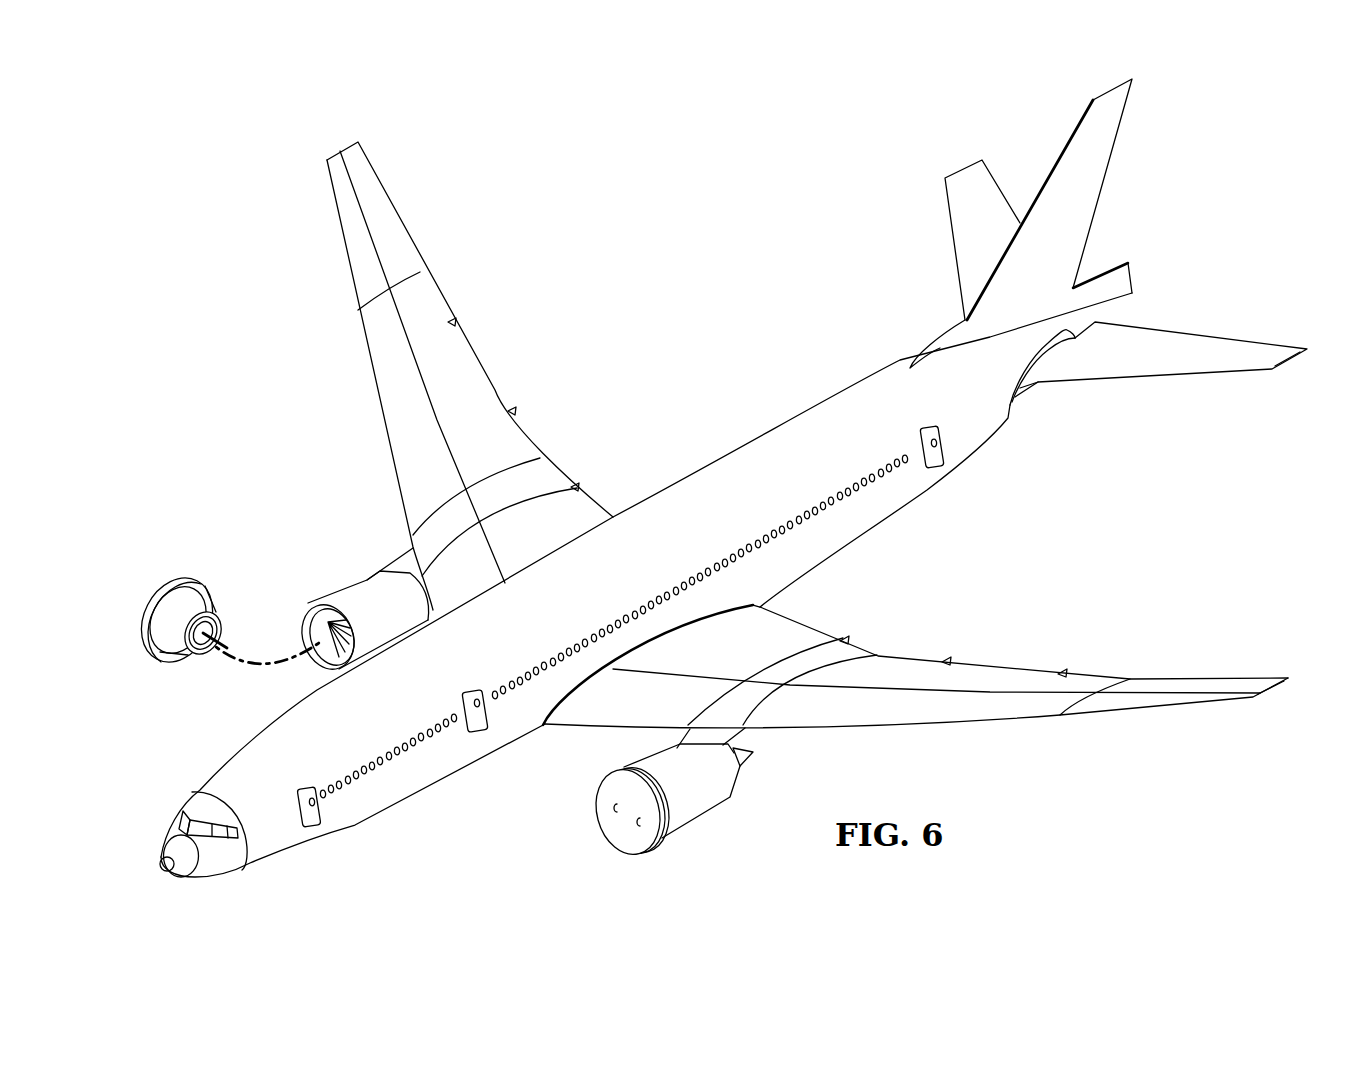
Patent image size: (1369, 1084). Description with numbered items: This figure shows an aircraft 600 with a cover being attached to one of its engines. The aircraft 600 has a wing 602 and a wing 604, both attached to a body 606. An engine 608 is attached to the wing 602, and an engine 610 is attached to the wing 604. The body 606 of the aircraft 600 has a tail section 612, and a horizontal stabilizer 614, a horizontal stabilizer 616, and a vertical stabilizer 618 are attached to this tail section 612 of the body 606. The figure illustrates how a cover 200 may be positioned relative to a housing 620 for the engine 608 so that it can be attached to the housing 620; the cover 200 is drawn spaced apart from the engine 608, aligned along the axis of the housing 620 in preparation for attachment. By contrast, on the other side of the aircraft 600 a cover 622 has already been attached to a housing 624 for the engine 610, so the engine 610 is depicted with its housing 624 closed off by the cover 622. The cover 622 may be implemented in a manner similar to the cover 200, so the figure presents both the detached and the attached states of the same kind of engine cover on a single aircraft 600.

The cover 200 is at (168, 581).
The aircraft 600 is at (676, 480).
The wing 602 is at (475, 372).
The wing 604 is at (975, 672).
The body 606 is at (594, 591).
The engine 608 is at (353, 572).
The engine 610 is at (716, 817).
The tail section 612 is at (1092, 428).
The horizontal stabilizer 614 is at (962, 232).
The horizontal stabilizer 616 is at (1173, 338).
The vertical stabilizer 618 is at (1093, 187).
The housing 620 is at (325, 602).
The cover 622 is at (600, 828).
The housing 624 is at (687, 822).